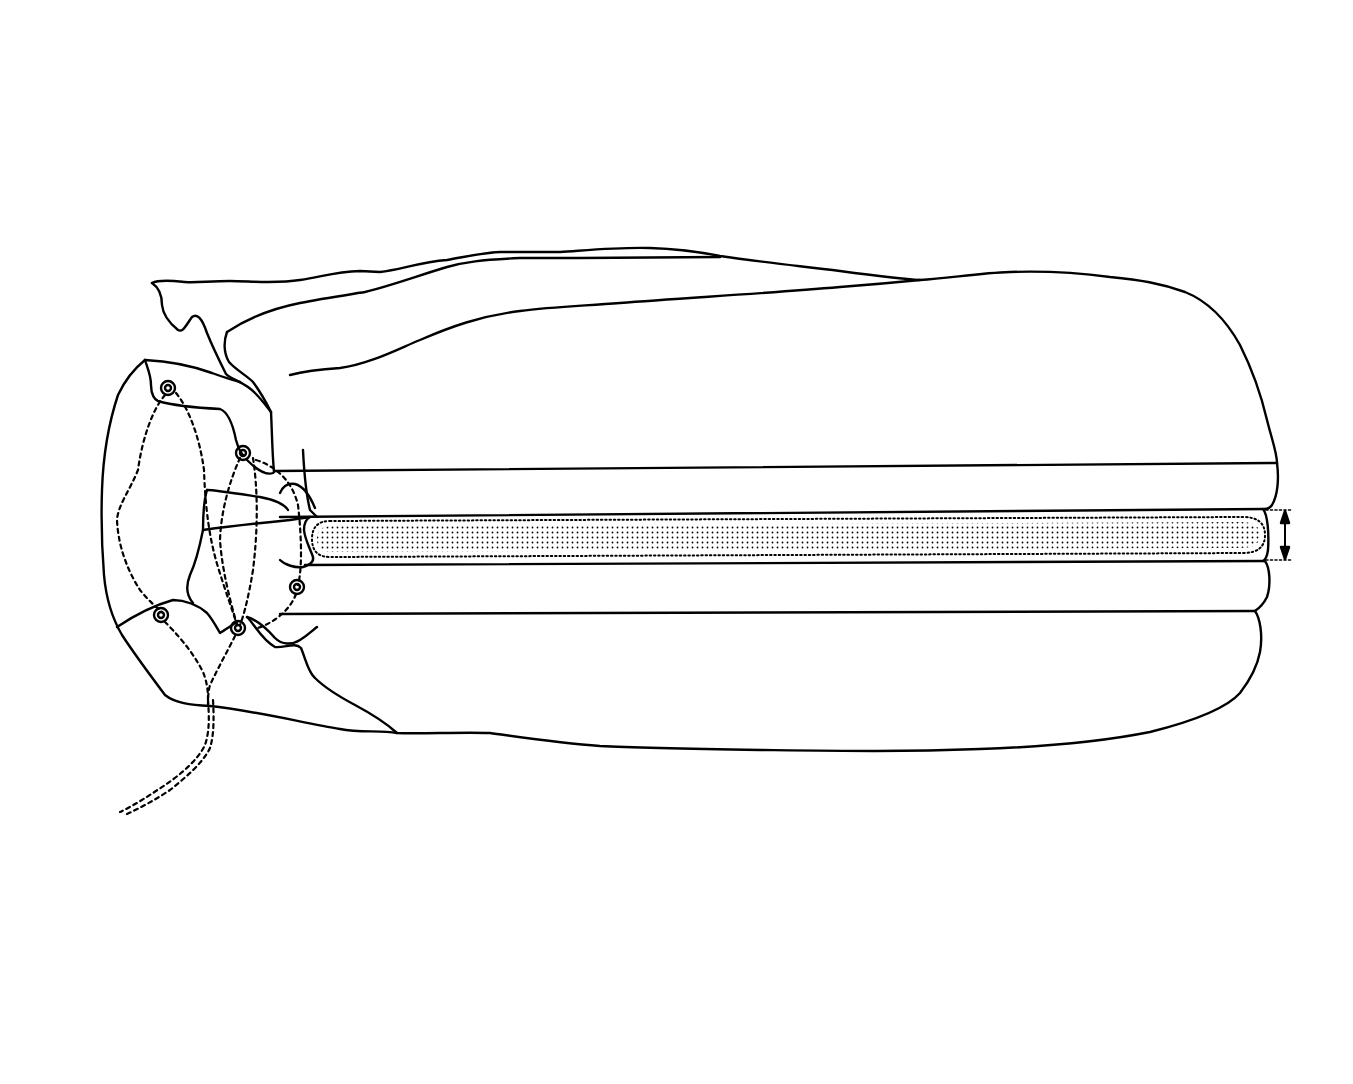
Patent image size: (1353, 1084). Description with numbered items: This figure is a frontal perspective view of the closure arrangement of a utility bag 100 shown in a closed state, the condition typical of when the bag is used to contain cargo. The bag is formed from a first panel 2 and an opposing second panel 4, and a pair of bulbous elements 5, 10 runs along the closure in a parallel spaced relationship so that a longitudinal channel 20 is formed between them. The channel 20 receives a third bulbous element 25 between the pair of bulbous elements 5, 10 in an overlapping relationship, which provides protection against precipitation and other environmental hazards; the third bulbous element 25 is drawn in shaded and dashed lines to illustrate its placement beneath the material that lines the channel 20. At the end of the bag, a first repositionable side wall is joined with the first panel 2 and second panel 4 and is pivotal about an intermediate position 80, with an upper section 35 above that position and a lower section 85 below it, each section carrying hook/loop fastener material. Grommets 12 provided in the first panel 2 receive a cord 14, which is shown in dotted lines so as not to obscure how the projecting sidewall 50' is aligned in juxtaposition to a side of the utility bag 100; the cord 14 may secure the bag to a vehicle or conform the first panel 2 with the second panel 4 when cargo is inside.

The utility bag 100 is at (1032, 205).
The first panel 2 is at (1139, 426).
The second panel 4 is at (1140, 696).
The bulbous element 5 is at (1268, 585).
The bulbous element 10 is at (1277, 483).
The grommets 12 is at (175, 388).
The cord 14 is at (172, 780).
The longitudinal channel 20 is at (1291, 535).
The third bulbous element 25 is at (737, 550).
The upper section of first side wall 35 is at (272, 510).
The projecting sidewall 50' is at (174, 512).
The intermediate position 80 is at (312, 541).
The lower section of first side wall 85 is at (305, 572).